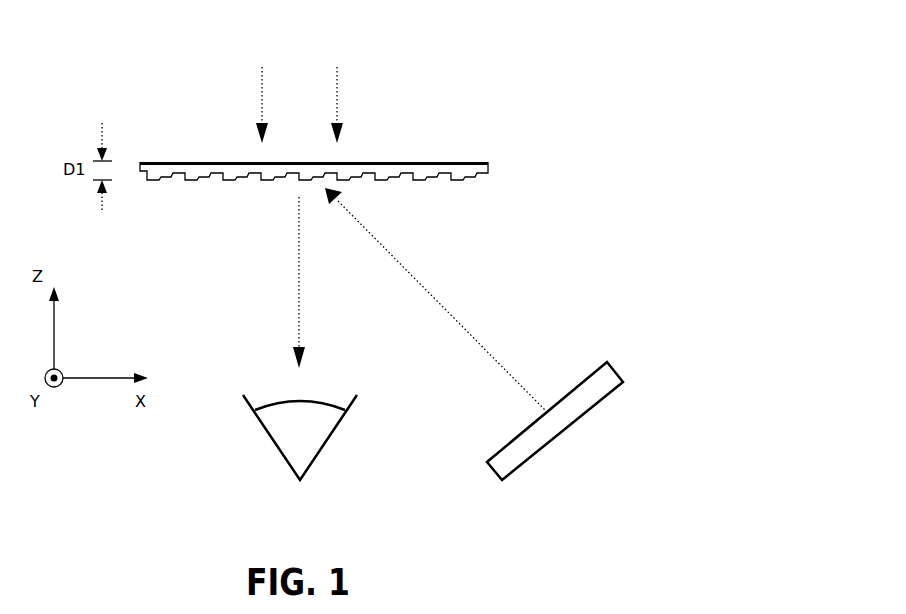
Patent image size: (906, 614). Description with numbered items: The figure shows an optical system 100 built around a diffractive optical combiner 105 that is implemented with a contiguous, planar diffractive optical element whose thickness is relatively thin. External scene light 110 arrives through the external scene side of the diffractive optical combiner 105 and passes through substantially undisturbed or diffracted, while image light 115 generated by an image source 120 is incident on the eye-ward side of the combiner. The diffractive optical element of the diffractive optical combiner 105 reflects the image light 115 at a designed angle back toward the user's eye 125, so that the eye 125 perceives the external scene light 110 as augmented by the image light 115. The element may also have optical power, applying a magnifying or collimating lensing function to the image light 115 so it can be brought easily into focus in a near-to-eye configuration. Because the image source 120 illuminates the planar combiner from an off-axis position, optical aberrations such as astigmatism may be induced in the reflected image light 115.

The optical system 100 is at (633, 61).
The diffractive optical combiner 105 is at (488, 172).
The external scene light 110 is at (337, 104).
The image light 115 is at (299, 256).
The image source 120 is at (540, 450).
The eye 125 is at (286, 438).